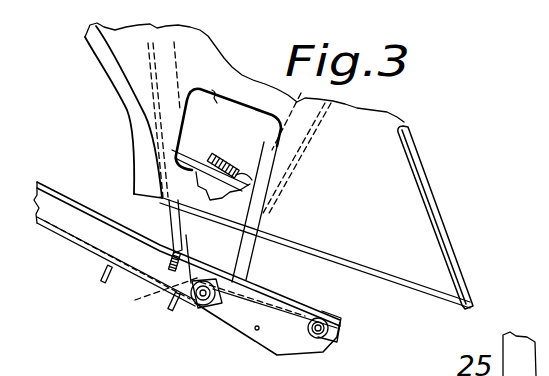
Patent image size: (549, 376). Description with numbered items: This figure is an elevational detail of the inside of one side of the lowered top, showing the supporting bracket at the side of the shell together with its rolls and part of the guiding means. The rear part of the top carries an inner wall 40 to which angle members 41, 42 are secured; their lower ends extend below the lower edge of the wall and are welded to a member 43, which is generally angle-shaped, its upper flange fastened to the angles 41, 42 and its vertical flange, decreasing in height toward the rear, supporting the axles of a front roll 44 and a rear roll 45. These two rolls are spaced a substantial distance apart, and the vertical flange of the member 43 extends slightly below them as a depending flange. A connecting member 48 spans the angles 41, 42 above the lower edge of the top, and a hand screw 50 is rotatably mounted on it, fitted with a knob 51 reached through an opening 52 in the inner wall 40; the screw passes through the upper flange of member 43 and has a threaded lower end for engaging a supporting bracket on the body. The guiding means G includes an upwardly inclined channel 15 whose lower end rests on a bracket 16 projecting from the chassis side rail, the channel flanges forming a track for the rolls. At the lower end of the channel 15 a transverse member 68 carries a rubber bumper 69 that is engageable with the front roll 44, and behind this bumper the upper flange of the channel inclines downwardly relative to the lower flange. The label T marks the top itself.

The inner wall 40 is at (142, 68).
The angle member 41 is at (182, 134).
The opening 52 is at (214, 91).
The knob 51 is at (210, 156).
The connecting member 48 is at (273, 175).
The angle member 42 is at (242, 256).
The channel 15 is at (88, 207).
The hand screw 50 is at (170, 213).
The front roll 44 is at (165, 298).
The bracket 16 is at (100, 278).
The guide G is at (74, 254).
The member 43 is at (315, 252).
The push frame T is at (403, 180).
The rubber bumper 69 is at (258, 288).
The rear roll 45 is at (325, 316).
The transverse member 68 is at (213, 330).